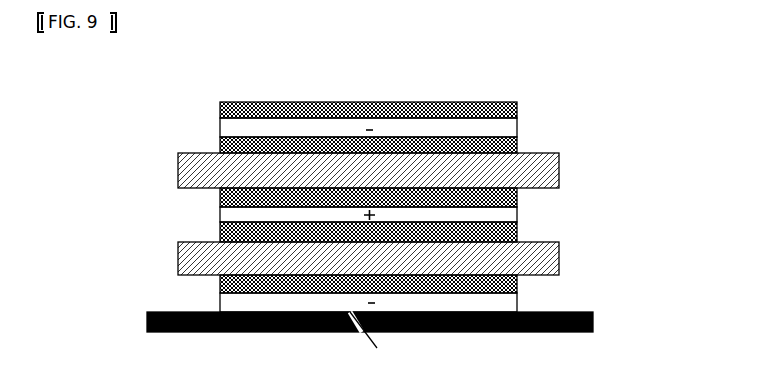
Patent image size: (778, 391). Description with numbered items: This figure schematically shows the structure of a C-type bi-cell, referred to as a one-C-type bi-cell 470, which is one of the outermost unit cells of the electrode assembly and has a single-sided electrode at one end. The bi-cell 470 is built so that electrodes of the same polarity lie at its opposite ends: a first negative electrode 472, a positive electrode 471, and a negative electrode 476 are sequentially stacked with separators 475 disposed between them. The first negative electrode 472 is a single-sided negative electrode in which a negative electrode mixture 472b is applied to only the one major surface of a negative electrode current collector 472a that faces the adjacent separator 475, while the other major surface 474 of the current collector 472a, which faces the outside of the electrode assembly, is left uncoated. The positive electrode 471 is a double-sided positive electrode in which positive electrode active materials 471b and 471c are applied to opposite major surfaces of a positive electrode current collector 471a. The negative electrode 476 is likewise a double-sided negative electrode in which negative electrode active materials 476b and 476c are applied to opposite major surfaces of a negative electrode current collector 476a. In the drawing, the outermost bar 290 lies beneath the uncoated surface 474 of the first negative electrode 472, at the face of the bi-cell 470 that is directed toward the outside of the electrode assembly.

The 1C-type bi-cell 470 is at (683, 80).
The negative electrode 476 is at (97, 77).
The negative electrode current collector 476a is at (220, 128).
The negative electrode active material 476b is at (220, 110).
The negative electrode active material 476c is at (220, 146).
The separator 475 is at (559, 170).
The positive electrode 471 is at (97, 180).
The positive electrode current collector 471a is at (220, 216).
The positive electrode active material 471b is at (220, 197).
The positive electrode active material 471c is at (220, 234).
The first negative electrode 472 is at (97, 270).
The negative electrode current collector 472a is at (220, 303).
The negative electrode mixture 472b is at (220, 284).
The substrate / first electrode 290 is at (593, 320).
The other major surface 474 is at (374, 344).